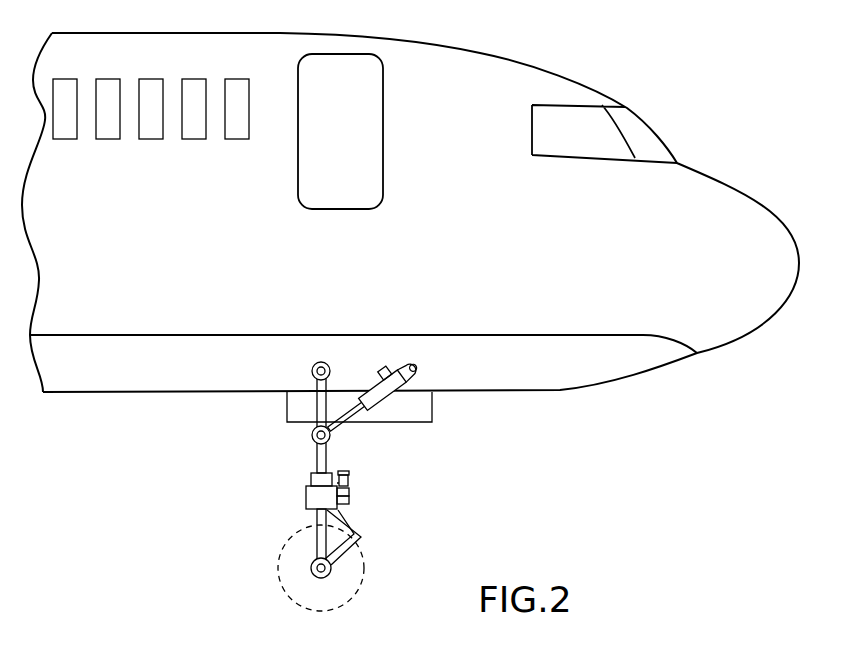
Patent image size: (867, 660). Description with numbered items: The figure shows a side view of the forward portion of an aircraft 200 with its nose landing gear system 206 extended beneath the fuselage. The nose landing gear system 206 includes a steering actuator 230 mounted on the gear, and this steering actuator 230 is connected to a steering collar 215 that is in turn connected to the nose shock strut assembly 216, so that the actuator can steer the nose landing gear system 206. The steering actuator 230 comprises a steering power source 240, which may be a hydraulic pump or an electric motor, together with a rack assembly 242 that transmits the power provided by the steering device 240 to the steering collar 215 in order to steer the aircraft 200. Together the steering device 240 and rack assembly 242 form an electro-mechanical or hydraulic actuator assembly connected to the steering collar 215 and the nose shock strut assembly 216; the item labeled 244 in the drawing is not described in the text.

The aircraft 200 is at (697, 118).
The nose landing gear system 206 is at (402, 481).
The steering collar 215 is at (315, 498).
The nose shock strut assembly 216 is at (375, 546).
The steering actuator 230 is at (348, 493).
The steering power source 240 is at (348, 476).
The rack assembly 242 is at (348, 502).
The mounting interface 244 is at (365, 483).